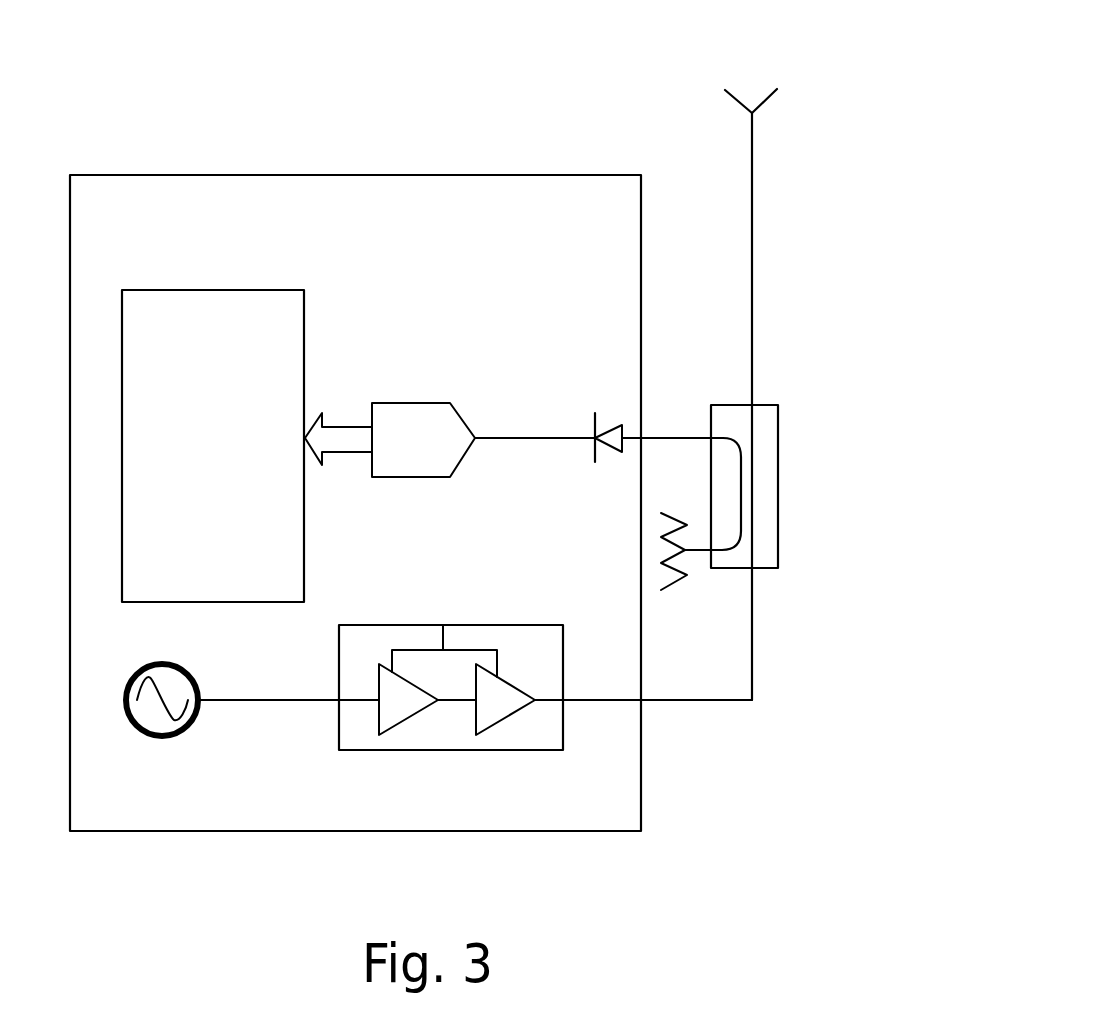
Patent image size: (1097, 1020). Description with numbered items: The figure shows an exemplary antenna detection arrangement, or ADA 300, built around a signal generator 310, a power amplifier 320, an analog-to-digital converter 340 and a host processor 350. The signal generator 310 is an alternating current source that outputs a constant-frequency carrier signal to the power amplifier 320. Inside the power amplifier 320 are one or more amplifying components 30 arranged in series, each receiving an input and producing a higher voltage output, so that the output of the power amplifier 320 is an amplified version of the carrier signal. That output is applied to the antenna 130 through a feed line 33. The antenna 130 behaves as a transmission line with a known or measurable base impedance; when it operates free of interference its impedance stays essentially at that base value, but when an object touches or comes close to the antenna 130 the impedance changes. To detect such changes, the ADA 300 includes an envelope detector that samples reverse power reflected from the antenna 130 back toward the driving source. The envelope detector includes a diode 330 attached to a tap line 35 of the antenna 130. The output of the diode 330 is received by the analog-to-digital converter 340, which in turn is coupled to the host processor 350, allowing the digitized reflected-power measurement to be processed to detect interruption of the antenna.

The antenna detection arrangement 300 is at (390, 175).
The host processor 350 is at (213, 446).
The analog-to-digital converter 340 is at (410, 403).
The diode 330 is at (615, 420).
The tap line 35 is at (670, 438).
The antenna 130 is at (779, 491).
The feed line 33 is at (680, 700).
The signal generator 310 is at (148, 738).
The power amplifier 320 is at (453, 748).
The amplifying component 30 is at (457, 699).